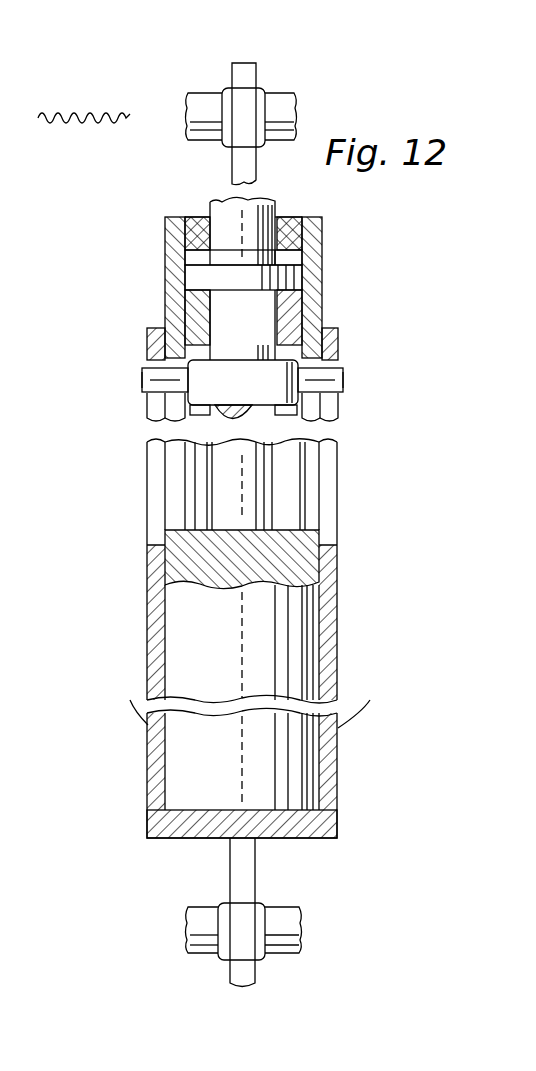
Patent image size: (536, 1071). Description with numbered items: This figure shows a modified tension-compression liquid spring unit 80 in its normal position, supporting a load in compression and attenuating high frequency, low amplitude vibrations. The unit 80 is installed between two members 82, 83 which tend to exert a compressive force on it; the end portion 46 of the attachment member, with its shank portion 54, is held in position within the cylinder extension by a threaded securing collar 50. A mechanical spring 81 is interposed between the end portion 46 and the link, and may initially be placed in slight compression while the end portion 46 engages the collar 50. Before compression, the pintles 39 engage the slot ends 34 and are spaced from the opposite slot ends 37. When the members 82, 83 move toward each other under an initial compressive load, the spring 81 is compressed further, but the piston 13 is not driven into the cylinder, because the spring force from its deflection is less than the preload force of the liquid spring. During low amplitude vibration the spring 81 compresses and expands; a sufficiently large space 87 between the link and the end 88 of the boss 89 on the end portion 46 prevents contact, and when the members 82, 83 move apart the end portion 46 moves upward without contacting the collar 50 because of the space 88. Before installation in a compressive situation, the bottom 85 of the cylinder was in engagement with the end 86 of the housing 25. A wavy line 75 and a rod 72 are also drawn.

The piston 13 is at (240, 462).
The housing 25 is at (338, 684).
The slot ends 34 is at (150, 380).
The slot ends 37 is at (160, 362).
The pintles 39 is at (142, 388).
The end portion of attachment member 46 is at (165, 265).
The securing collar 50 is at (312, 217).
The shank portion 54 is at (238, 166).
The piston rod 72 is at (175, 688).
The wavy line 75 is at (64, 130).
The tension-compression liquid spring embodiment 80 is at (386, 355).
The mechanical spring 81 is at (322, 310).
The member 82 is at (200, 930).
The member 83 is at (290, 103).
The bottom of cylinder 85 is at (283, 840).
The end of housing 86 is at (182, 800).
The space 87 is at (236, 354).
The end of boss 88 is at (322, 258).
The boss 89 is at (185, 307).